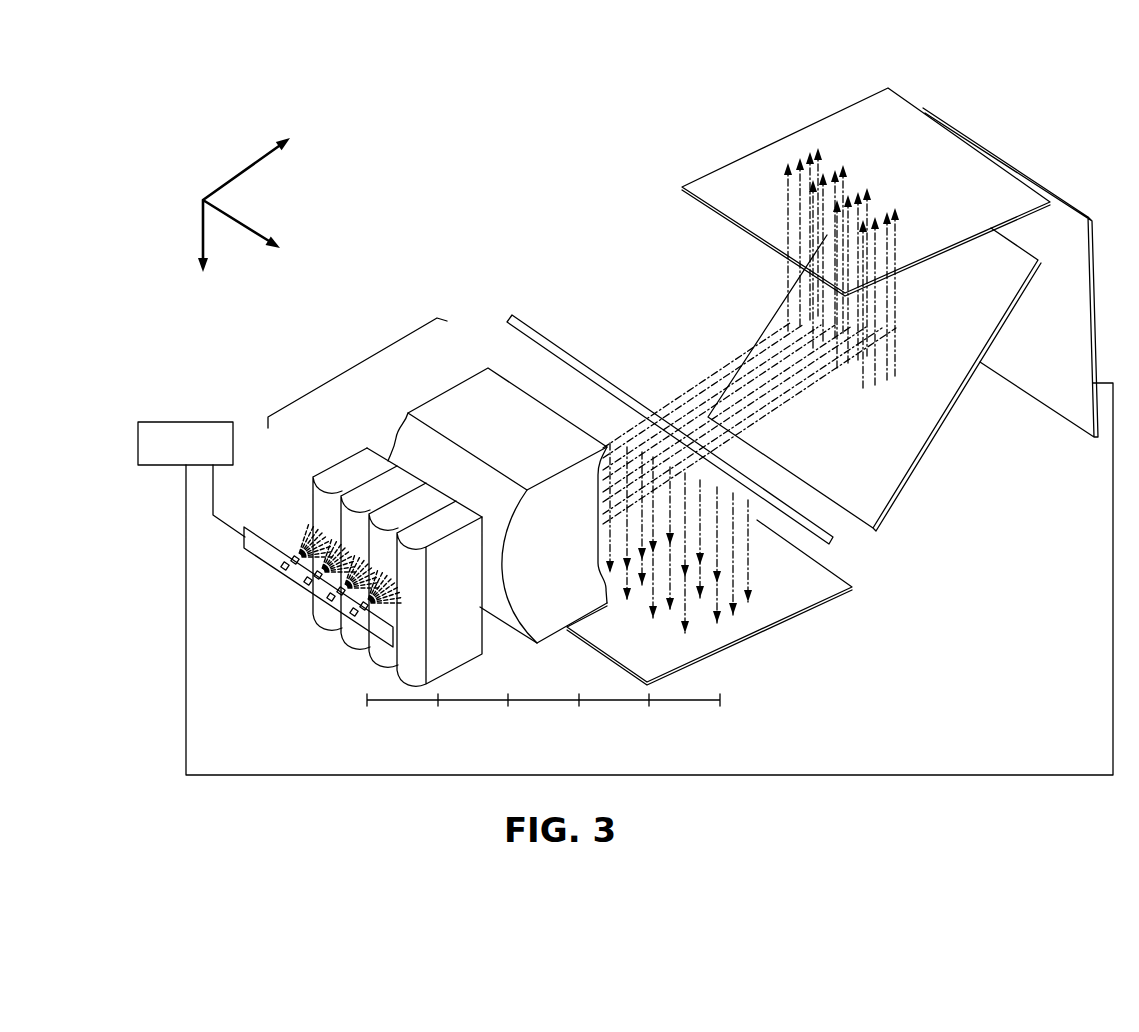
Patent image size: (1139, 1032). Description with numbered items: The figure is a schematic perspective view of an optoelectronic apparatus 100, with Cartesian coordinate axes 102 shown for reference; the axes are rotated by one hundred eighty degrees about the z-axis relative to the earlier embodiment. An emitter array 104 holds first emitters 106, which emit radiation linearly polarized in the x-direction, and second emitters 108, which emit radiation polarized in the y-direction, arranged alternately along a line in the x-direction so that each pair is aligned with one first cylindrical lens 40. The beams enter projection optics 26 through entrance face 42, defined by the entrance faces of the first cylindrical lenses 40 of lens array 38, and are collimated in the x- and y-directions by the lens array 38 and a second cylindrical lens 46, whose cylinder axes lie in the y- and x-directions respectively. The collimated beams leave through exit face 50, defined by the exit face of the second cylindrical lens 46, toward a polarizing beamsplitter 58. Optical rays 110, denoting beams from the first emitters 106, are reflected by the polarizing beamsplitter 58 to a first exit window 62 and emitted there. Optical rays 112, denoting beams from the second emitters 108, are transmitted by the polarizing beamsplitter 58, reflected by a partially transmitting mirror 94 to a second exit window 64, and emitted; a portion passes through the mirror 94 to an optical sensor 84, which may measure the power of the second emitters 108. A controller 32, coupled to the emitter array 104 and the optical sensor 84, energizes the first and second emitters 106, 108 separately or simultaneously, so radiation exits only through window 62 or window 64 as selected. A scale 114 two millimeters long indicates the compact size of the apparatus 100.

The projection optics 26 is at (368, 366).
The controller 32 is at (186, 422).
The lens array 38 is at (332, 464).
The first cylindrical lens 40 is at (366, 492).
The entrance face 42 is at (315, 502).
The second cylindrical lens 46 is at (466, 398).
The exit face 50 is at (608, 568).
The polarizing beamsplitter 58 is at (834, 542).
The first exit window 62 is at (786, 622).
The second exit window 64 is at (706, 185).
The optical sensor 84 is at (1079, 328).
The partially transmitting mirror 94 is at (929, 433).
The optoelectronic apparatus 100 is at (549, 205).
The Cartesian coordinate axes 102 is at (240, 172).
The emitter array 104 is at (258, 556).
The first emitter 106 is at (355, 614).
The second emitter 108 is at (364, 617).
The optical rays 110 is at (690, 567).
The optical rays 112 is at (683, 347).
The scale 114 is at (390, 706).